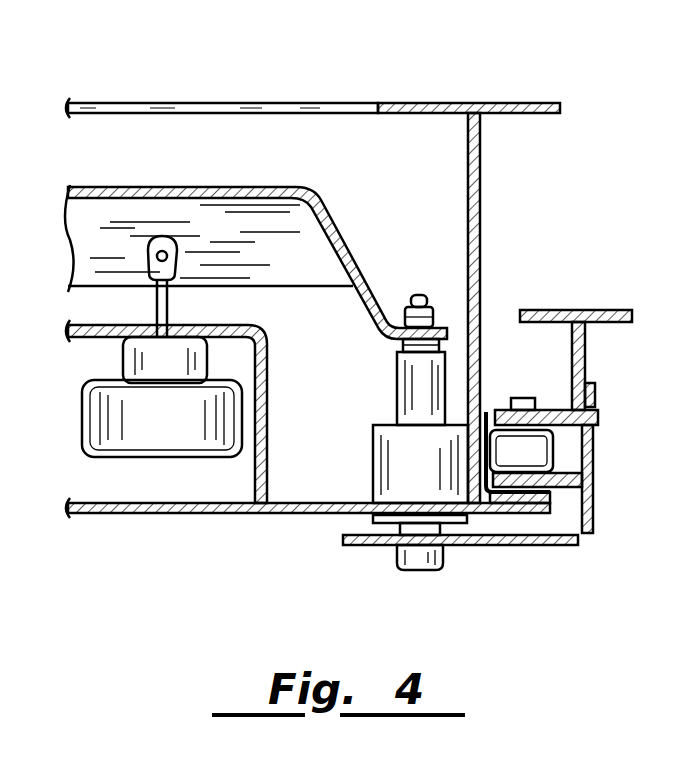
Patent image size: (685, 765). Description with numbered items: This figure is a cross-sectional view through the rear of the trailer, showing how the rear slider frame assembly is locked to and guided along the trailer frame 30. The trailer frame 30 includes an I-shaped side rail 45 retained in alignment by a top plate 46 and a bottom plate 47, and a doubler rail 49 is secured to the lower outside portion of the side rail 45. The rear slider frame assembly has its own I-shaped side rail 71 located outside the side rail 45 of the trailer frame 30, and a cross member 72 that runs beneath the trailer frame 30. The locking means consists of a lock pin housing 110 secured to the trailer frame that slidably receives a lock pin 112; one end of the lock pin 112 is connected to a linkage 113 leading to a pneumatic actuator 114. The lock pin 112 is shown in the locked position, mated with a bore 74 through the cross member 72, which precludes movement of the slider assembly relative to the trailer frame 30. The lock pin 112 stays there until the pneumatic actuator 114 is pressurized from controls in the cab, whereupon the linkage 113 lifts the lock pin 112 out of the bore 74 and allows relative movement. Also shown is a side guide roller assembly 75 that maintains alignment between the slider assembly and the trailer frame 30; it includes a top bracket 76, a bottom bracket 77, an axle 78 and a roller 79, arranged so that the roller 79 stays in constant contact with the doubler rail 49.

The top plate 46 is at (238, 102).
The side rail 45 is at (497, 227).
The linkage 113 is at (342, 233).
The pneumatic actuator 114 is at (162, 397).
The bottom plate 47 is at (195, 513).
The lock pin 112 is at (417, 393).
The lock pin housing 110 is at (420, 464).
The bore 74 is at (397, 552).
The cross member 72 is at (550, 548).
The doubler rail 49 is at (478, 470).
The side rail 71 is at (562, 308).
The top bracket 76 is at (558, 410).
The axle 78 is at (525, 397).
The roller 79 is at (521, 451).
The bottom bracket 77 is at (570, 480).
The side guide roller assembly 75 is at (622, 435).
The trailer frame 30 is at (684, 505).